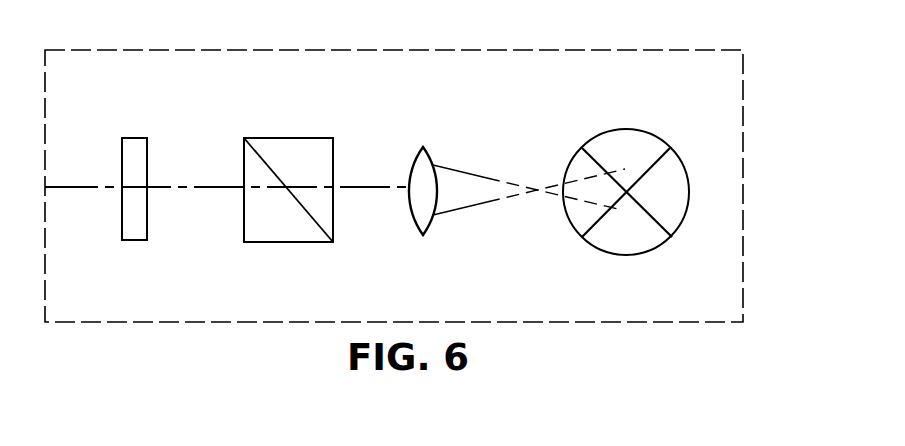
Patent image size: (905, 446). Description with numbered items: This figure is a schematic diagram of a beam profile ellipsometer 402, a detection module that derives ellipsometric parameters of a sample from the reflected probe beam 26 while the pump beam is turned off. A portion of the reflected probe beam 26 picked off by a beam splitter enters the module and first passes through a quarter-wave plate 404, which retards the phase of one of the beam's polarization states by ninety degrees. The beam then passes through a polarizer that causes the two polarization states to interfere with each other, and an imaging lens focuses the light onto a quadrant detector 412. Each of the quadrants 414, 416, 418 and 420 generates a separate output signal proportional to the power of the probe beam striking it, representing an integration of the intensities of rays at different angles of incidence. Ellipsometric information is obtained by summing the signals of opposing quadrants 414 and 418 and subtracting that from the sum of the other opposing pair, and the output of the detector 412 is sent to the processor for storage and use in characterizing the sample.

The light beam / optical axis 26 is at (58, 186).
The beam profile ellipsometer 402 is at (552, 51).
The quarter-wave plate 404 is at (275, 243).
The quadrant detector 412 is at (608, 191).
The quadrant 414 is at (577, 169).
The quadrant 416 is at (625, 135).
The quadrant 418 is at (680, 203).
The quadrant 420 is at (630, 242).